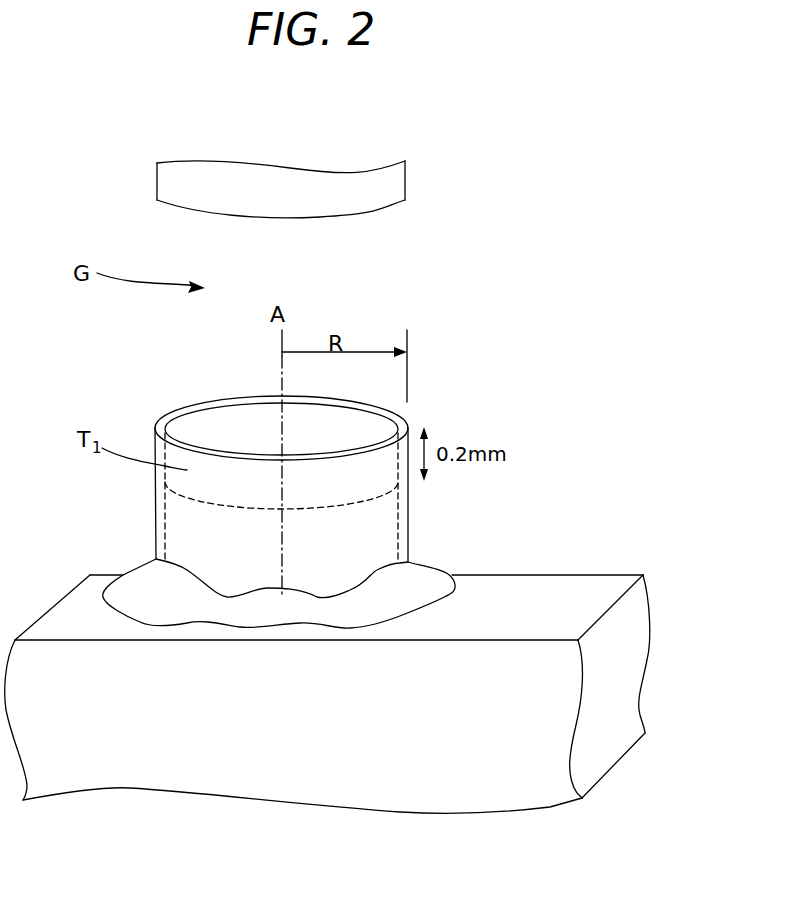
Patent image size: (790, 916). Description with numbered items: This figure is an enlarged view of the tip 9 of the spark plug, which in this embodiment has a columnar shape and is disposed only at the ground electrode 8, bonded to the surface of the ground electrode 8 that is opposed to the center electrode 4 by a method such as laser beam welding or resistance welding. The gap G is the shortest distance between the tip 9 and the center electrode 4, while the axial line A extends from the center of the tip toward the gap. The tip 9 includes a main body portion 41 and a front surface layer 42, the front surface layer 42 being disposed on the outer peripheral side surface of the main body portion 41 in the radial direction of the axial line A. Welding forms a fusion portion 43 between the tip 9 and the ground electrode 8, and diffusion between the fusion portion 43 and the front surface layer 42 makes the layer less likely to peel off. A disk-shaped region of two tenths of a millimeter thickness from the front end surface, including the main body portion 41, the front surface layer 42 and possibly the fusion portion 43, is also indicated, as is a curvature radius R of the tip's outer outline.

The center electrode 4 is at (390, 183).
The ground electrode 8 is at (542, 667).
The tip 9 is at (377, 462).
The main body portion 41 is at (197, 423).
The front surface layer 42 is at (408, 527).
The fusion portion 43 is at (127, 595).